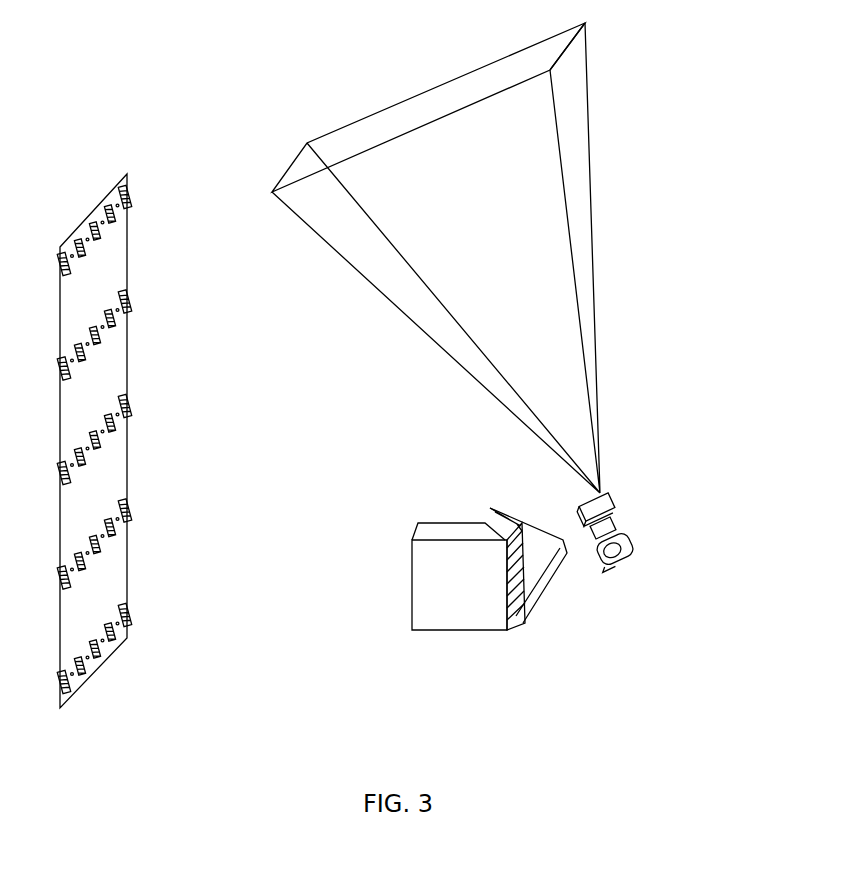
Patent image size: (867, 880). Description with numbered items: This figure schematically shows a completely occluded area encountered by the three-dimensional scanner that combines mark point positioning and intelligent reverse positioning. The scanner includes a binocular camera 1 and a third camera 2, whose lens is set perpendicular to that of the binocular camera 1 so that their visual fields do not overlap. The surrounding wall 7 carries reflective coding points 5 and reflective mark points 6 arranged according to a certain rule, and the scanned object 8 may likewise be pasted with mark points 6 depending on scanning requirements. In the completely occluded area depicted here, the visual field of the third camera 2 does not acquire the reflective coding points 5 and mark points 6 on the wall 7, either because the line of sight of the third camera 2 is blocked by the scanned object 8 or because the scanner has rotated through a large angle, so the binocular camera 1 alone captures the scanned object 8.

The binocular camera 1 is at (630, 555).
The third camera 2 is at (607, 490).
The reflective coding point 5 is at (127, 210).
The reflective mark point 6 is at (128, 313).
The surrounding wall 7 is at (107, 573).
The scanned object 8 is at (442, 587).